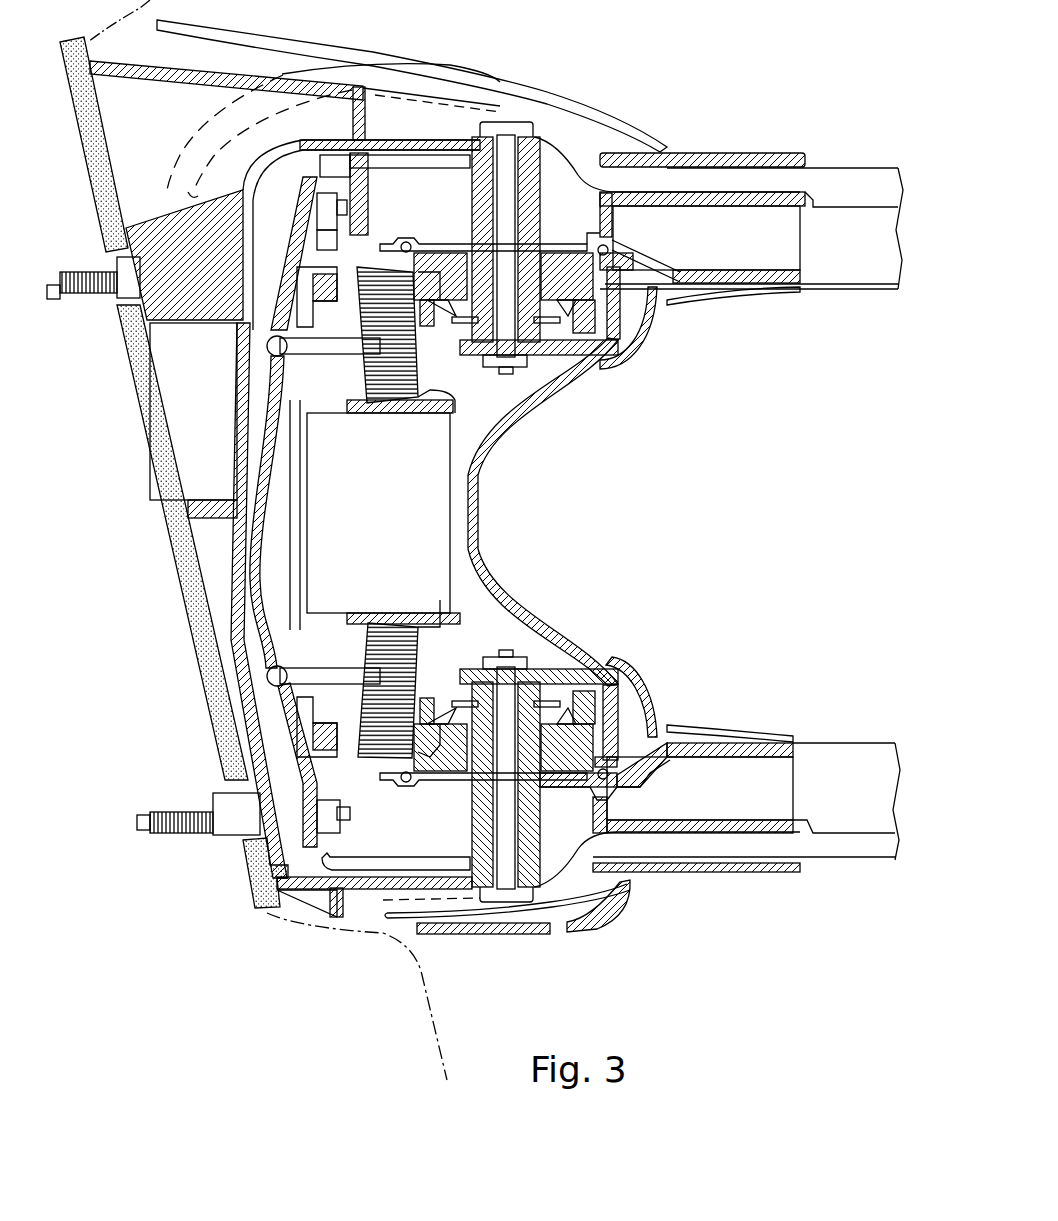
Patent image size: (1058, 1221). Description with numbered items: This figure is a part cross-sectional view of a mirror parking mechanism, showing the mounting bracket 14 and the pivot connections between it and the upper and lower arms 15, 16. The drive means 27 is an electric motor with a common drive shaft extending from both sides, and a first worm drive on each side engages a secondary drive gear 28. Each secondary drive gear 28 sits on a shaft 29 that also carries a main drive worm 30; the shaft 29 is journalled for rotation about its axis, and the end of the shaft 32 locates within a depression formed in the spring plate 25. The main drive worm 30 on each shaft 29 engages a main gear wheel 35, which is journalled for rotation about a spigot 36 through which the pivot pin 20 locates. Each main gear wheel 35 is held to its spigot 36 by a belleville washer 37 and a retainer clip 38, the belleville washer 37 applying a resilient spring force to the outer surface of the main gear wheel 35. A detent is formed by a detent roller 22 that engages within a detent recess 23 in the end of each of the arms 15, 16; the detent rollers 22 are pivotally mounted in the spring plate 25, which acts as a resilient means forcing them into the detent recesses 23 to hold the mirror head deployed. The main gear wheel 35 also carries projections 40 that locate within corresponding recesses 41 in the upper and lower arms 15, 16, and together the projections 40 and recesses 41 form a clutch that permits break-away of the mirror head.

The mounting bracket 14 is at (480, 553).
The upper arm 15 is at (863, 290).
The lower arm 16 is at (862, 745).
The pivot pin 20 is at (513, 125).
The detent roller 22 is at (327, 210).
The detent recess 23 is at (352, 203).
The spring plate 25 is at (283, 732).
The drive means 27 is at (405, 522).
The secondary drive gear 28 is at (445, 390).
The shaft 29 is at (305, 335).
The main drive worm 30 is at (423, 365).
The end of the shaft 32 is at (272, 352).
The main gear wheel 35 is at (615, 352).
The spigot 36 is at (588, 720).
The belleville washer 37 is at (605, 680).
The retainer clip 38 is at (560, 698).
The projection 40 is at (585, 252).
The recess 41 is at (560, 255).